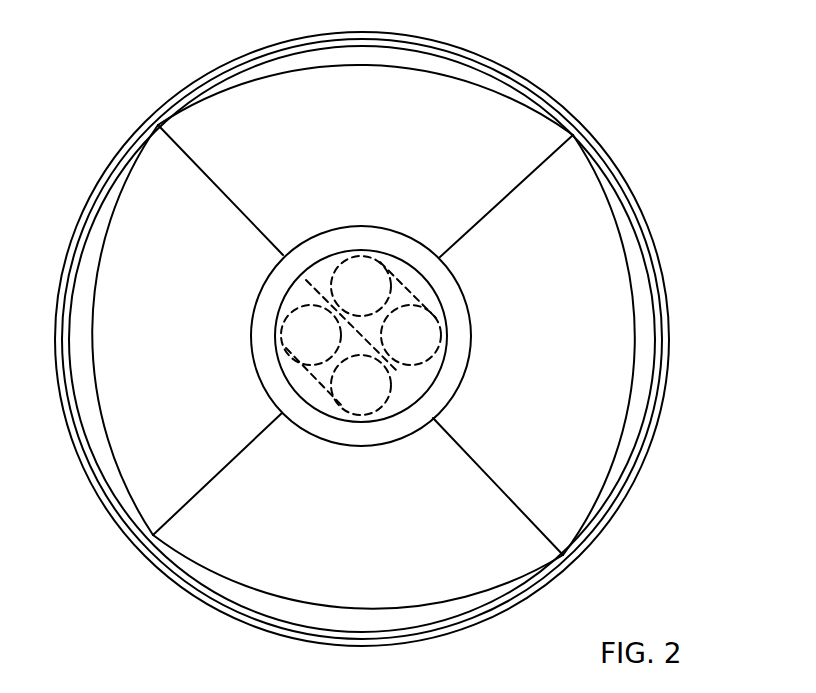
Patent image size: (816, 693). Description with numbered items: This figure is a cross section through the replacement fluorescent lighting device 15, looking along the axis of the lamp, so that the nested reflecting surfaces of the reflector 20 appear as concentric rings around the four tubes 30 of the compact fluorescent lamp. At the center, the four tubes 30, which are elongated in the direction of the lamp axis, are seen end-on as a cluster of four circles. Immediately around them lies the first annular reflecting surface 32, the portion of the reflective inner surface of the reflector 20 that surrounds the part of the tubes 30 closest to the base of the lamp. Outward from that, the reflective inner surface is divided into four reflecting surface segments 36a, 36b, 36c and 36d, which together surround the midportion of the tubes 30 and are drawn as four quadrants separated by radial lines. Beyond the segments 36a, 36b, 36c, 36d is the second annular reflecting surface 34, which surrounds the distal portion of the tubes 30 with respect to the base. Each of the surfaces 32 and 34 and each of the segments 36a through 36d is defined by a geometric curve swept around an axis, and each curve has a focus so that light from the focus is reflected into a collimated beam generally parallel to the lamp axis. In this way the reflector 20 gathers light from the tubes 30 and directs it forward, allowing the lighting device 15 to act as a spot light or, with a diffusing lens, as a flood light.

The replacement fluorescent lighting device 15 is at (528, 78).
The reflector 20 is at (656, 247).
The second annular reflecting surface 34 is at (645, 360).
The reflecting surface segment 36a is at (562, 322).
The reflecting surface segment 36b is at (388, 146).
The reflecting surface segment 36c is at (192, 336).
The reflecting surface segment 36d is at (390, 546).
The first annular reflecting surface 32 is at (452, 279).
The tubes 30 is at (351, 257).